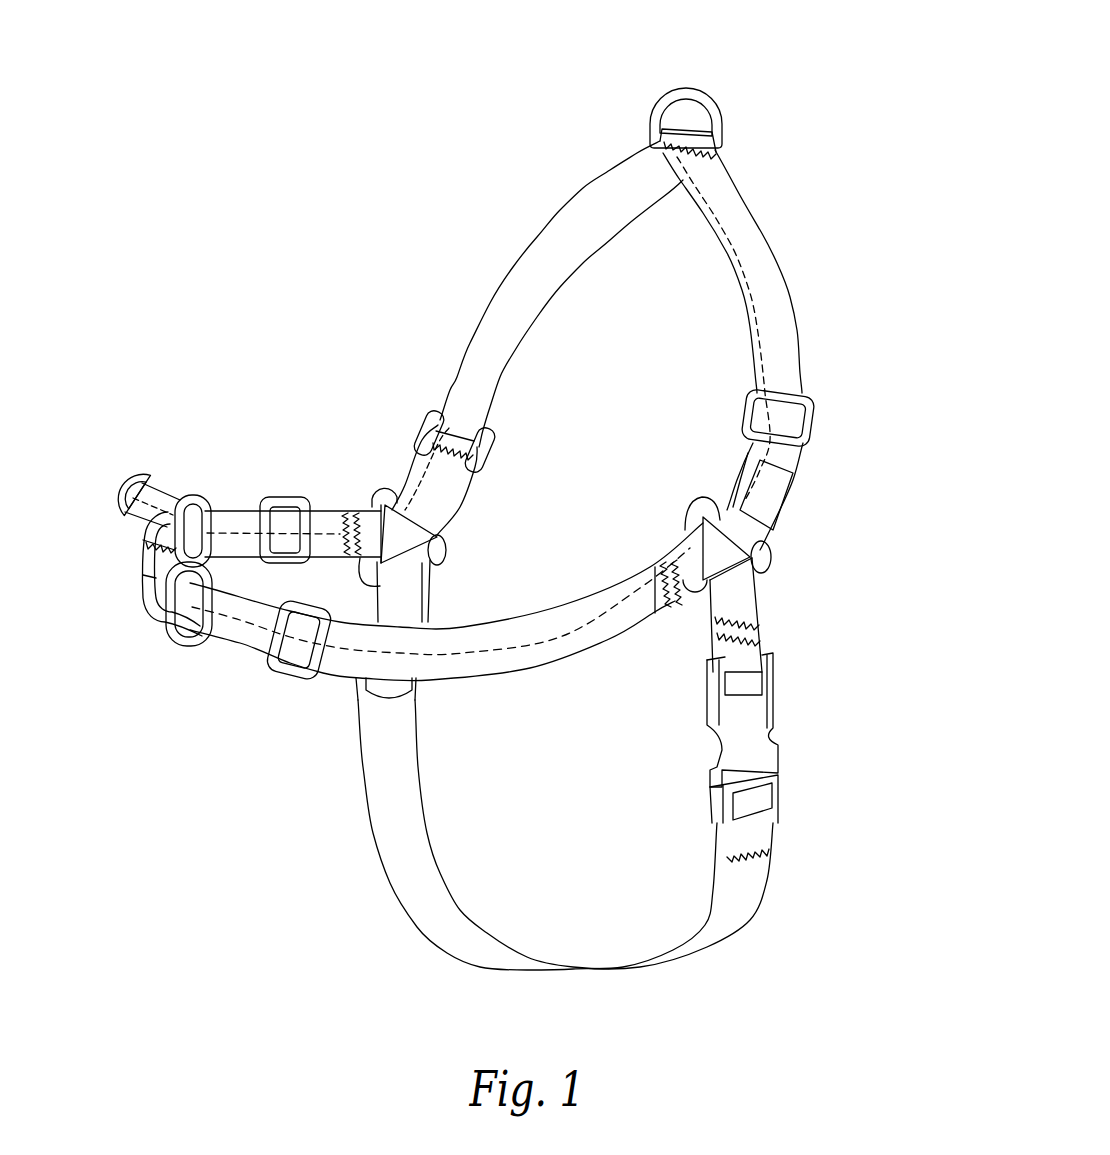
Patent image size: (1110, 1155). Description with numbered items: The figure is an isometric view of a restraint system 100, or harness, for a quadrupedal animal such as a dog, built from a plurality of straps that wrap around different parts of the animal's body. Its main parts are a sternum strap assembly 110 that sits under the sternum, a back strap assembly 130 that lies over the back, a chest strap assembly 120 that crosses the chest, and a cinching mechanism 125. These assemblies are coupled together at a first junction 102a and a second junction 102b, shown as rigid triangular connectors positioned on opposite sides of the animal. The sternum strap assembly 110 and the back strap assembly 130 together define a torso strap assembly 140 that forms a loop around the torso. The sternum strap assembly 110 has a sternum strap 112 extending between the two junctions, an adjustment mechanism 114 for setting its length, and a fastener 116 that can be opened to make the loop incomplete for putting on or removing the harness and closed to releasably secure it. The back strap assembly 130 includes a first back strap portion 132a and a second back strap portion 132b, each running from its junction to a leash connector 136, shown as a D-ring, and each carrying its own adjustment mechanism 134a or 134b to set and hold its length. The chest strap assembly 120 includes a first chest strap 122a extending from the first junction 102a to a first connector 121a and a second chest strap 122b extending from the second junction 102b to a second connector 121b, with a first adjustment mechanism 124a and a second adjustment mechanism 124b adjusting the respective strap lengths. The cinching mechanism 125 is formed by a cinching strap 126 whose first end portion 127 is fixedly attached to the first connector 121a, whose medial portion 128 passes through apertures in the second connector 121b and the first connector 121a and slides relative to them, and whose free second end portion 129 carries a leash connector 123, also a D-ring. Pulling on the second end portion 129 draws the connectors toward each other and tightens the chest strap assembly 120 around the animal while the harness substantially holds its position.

The restraint system 100 is at (243, 116).
The sternum strap assembly 110 is at (450, 976).
The sternum strap 112 is at (372, 858).
The adjustment mechanism 114 is at (356, 705).
The fastener 116 is at (775, 713).
The chest strap assembly 120 is at (150, 658).
The first connector 121a is at (203, 497).
The second connector 121b is at (177, 645).
The first chest strap 122a is at (243, 510).
The second chest strap 122b is at (227, 645).
The leash connector 123 is at (107, 473).
The first adjustment mechanism 124a is at (297, 493).
The second adjustment mechanism 124b is at (287, 677).
The cinching mechanism 125 is at (108, 551).
The cinching strap 126 is at (150, 603).
The first end portion 127 is at (143, 540).
The medial portion 128 is at (140, 577).
The second end portion 129 is at (160, 483).
The back strap assembly 130 is at (830, 160).
The first back strap portion 132a is at (545, 230).
The second back strap portion 132b is at (790, 280).
The first adjustment mechanism 134a is at (428, 413).
The second adjustment mechanism 134b is at (813, 417).
The leash connector 136 is at (690, 92).
The torso strap assembly 140 is at (834, 597).
The first junction 102a is at (385, 485).
The second junction 102b is at (767, 560).